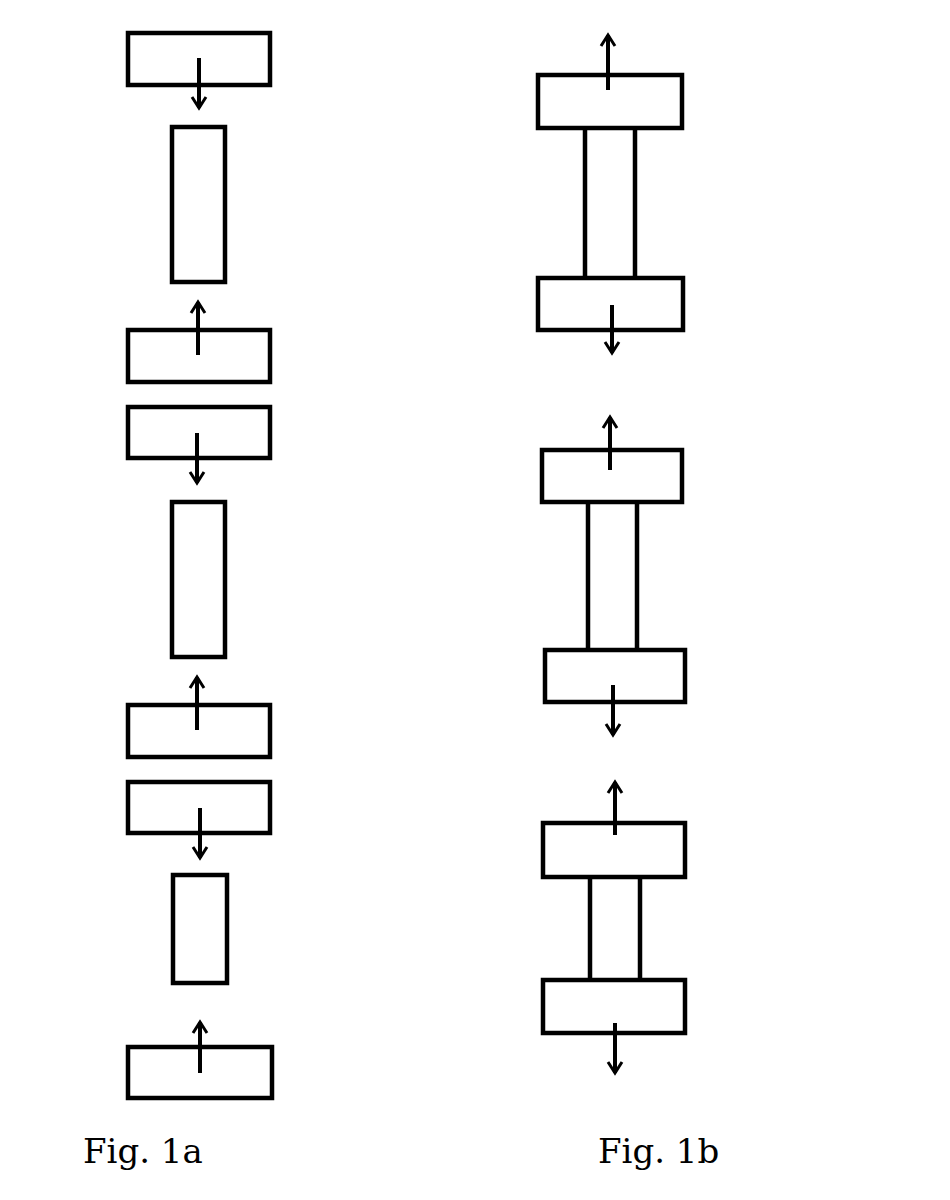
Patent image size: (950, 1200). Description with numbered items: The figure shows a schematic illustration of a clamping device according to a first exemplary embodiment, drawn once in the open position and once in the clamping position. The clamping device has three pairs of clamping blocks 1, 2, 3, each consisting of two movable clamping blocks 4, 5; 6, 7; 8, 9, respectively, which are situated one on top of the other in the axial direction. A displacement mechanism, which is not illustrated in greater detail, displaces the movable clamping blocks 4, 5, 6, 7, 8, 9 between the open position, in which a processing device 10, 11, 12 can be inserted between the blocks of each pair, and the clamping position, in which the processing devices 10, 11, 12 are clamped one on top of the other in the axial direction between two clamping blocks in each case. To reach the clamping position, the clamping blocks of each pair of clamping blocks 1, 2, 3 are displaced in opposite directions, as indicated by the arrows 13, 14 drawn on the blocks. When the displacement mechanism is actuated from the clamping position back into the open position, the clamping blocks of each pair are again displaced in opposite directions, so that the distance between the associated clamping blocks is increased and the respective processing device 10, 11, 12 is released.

In FIG. 1B, the pair of clamping blocks 1 is at (597, 202).
In FIG. 1B, the pair of clamping blocks 2 is at (599, 576).
In FIG. 1B, the pair of clamping blocks 3 is at (600, 930).
In FIG. 1A, the movable clamping block 4 is at (260, 66).
In FIG. 1B, the movable clamping block 4 is at (558, 102).
In FIG. 1A, the movable clamping block 5 is at (252, 355).
In FIG. 1B, the movable clamping block 5 is at (573, 302).
In FIG. 1A, the movable clamping block 6 is at (248, 432).
In FIG. 1B, the movable clamping block 6 is at (585, 477).
In FIG. 1A, the movable clamping block 7 is at (250, 737).
In FIG. 1B, the movable clamping block 7 is at (570, 678).
In FIG. 1A, the movable clamping block 8 is at (243, 800).
In FIG. 1B, the movable clamping block 8 is at (577, 850).
In FIG. 1A, the movable clamping block 9 is at (240, 1077).
In FIG. 1B, the movable clamping block 9 is at (575, 1017).
In FIG. 1A, the processing device 10 is at (200, 203).
In FIG. 1B, the processing device 10 is at (608, 203).
In FIG. 1A, the processing device 11 is at (200, 577).
In FIG. 1B, the processing device 11 is at (615, 558).
In FIG. 1A, the processing device 12 is at (200, 929).
In FIG. 1B, the processing device 12 is at (615, 928).
In FIG. 1A, the arrow 13 is at (188, 307).
In FIG. 1B, the arrow 13 is at (618, 45).
In FIG. 1A, the arrow 14 is at (188, 103).
In FIG. 1B, the arrow 14 is at (617, 343).